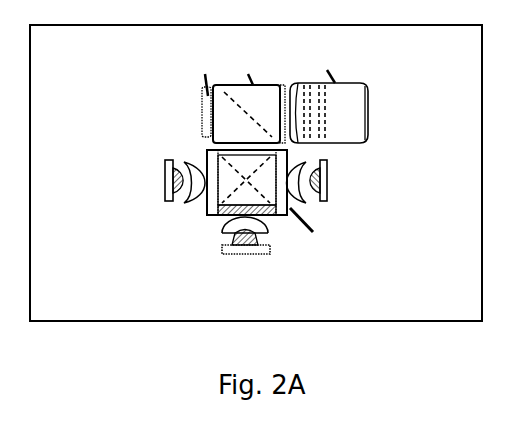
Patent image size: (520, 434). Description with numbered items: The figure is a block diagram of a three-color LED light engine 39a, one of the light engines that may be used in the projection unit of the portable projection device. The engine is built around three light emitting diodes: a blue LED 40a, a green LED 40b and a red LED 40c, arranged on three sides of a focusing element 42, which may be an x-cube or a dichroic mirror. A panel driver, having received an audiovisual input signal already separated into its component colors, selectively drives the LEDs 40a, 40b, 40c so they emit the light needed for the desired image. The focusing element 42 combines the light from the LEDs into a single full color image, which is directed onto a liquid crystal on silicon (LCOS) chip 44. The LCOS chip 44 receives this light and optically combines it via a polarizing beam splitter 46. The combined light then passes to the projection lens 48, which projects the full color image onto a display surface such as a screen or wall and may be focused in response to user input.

The three-color LED light engine 39a is at (205, 309).
The liquid crystal on silicon (LCOS) chip 44 is at (196, 98).
The polarizing beam splitter 46 is at (290, 66).
The focusing element 42 is at (443, 274).
The blue LED 40a is at (160, 161).
The green LED 40b is at (270, 255).
The red LED 40c is at (330, 176).
The projection lens 48 is at (362, 134).